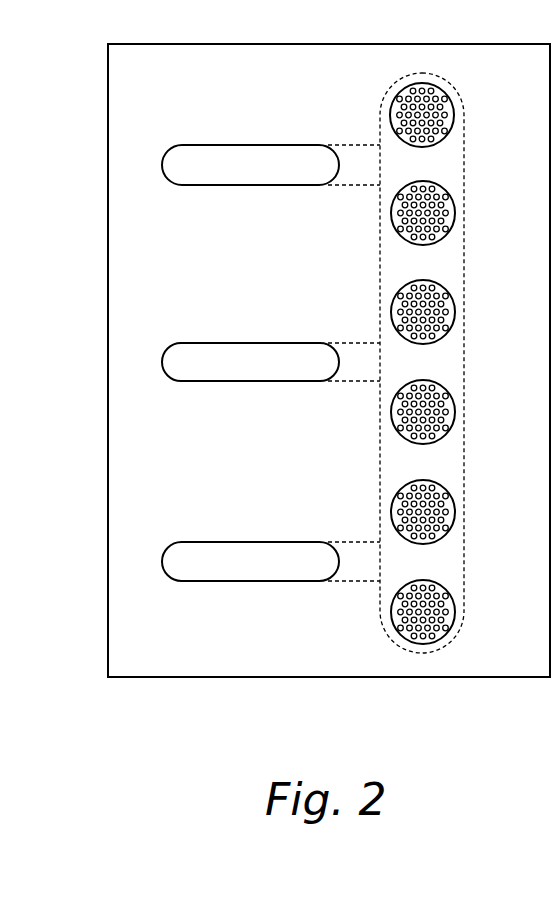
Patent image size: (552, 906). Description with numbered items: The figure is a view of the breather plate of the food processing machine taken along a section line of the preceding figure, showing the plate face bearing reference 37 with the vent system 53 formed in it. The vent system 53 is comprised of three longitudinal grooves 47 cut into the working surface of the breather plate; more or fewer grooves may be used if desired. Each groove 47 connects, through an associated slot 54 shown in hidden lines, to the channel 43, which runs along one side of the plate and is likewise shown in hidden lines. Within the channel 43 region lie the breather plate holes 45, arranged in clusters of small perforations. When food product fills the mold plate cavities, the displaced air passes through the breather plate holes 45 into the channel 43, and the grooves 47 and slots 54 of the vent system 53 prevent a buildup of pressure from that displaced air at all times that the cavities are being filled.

The plate 37 is at (187, 270).
The longitudinal groove 47 is at (198, 344).
The vent system 53 is at (208, 574).
The slot 54 is at (355, 345).
The channel 43 is at (446, 578).
The breather plate hole 45 is at (383, 625).